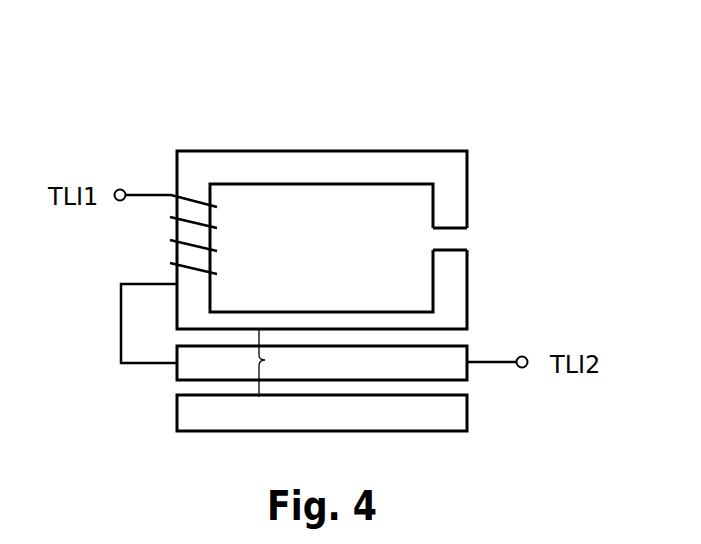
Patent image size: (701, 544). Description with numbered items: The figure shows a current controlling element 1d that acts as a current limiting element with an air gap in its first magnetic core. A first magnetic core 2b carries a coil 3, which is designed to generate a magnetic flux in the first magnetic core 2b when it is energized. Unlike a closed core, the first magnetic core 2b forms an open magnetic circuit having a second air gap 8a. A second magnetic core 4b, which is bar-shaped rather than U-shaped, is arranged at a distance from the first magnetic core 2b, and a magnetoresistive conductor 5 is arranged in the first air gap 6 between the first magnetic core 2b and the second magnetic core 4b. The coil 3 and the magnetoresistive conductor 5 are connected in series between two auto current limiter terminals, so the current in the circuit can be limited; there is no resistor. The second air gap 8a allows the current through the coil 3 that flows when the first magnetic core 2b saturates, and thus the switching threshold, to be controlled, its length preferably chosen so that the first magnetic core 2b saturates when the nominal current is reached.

The current controlling element 1d is at (113, 77).
The first magnetic core 2b is at (422, 165).
The coil 3 is at (195, 201).
The second air gap 8a is at (455, 242).
The magnetoresistive conductor 5 is at (457, 362).
The first air gap 6 is at (274, 363).
The second magnetic core 4b is at (455, 412).